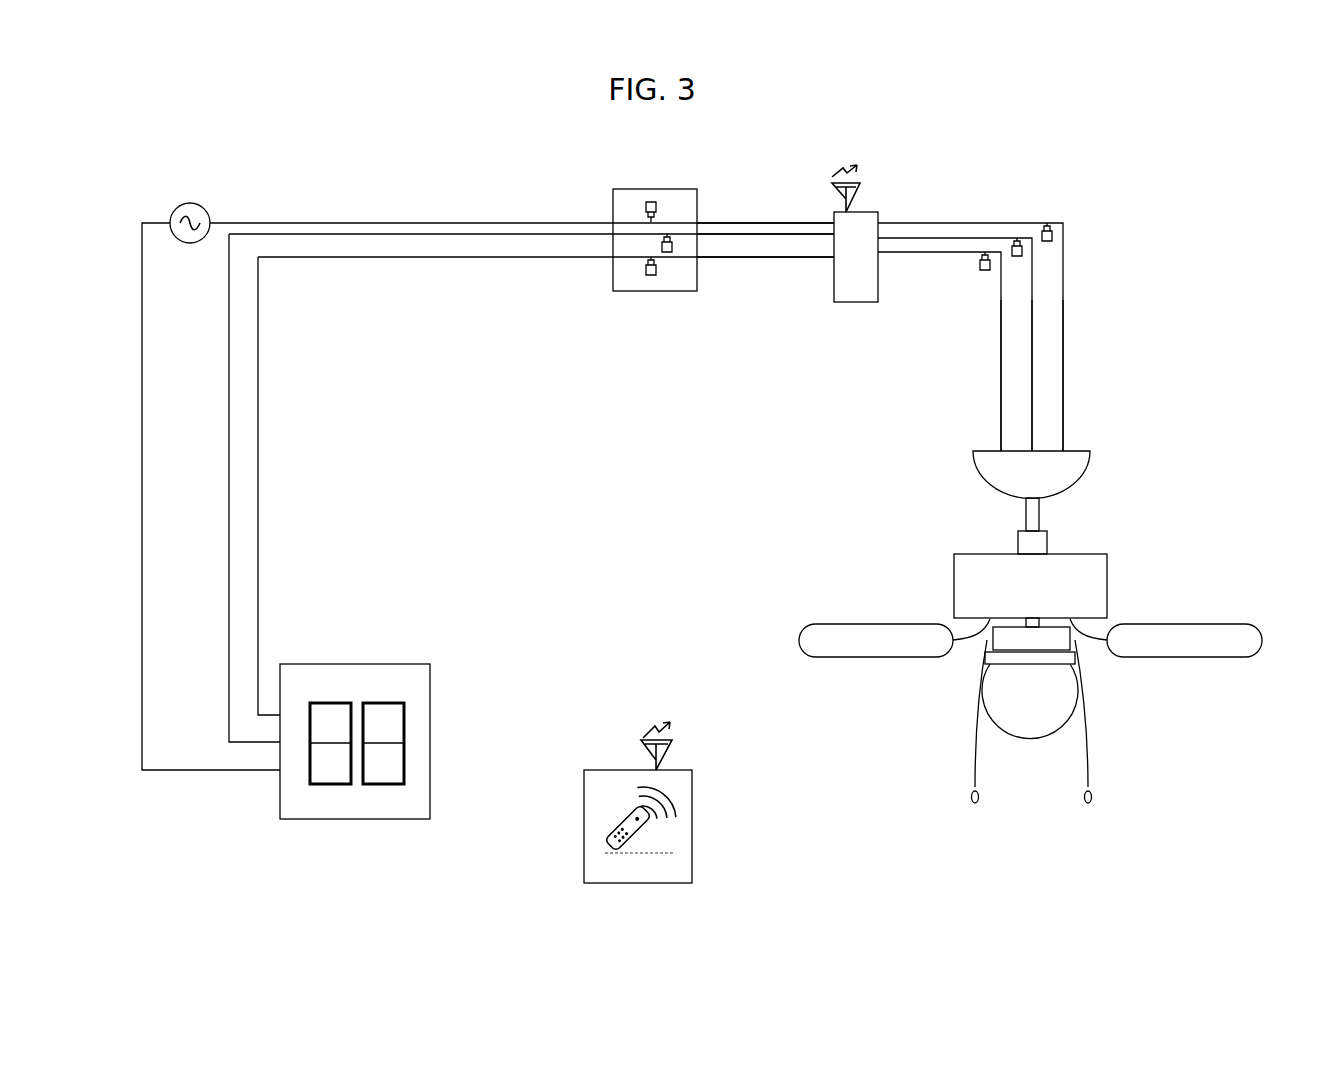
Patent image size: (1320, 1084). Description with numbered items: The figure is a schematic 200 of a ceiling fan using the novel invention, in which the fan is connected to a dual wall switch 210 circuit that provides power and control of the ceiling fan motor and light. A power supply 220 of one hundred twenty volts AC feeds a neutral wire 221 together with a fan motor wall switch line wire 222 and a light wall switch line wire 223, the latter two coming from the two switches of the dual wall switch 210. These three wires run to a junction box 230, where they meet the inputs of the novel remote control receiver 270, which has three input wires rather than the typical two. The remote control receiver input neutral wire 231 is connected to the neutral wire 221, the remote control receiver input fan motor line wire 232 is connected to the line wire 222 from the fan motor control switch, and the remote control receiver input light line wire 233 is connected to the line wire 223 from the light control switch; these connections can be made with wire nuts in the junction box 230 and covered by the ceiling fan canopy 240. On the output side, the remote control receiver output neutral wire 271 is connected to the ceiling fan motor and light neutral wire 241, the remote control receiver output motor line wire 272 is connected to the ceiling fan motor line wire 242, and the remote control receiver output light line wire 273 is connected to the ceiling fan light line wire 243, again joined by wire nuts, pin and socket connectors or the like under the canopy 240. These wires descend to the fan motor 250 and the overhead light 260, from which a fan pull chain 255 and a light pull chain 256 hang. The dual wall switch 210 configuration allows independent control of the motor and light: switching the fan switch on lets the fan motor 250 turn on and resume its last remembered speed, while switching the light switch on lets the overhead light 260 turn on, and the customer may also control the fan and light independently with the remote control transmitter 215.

The two wall switches for controlling ceiling fan and remote control 200 is at (1166, 135).
The dual wall switch 210 is at (408, 750).
The remote control transmitter 215 is at (695, 792).
The power supply (120 VAC) 220 is at (242, 179).
The neutral wire 221 is at (377, 220).
The fan motor wall switch line wire 222 is at (462, 232).
The light wall switch line wire 223 is at (377, 257).
The junction box 230 is at (633, 287).
The remote control receiver input neutral wire 231 is at (730, 222).
The remote control receiver input fan motor line wire 232 is at (746, 234).
The remote control receiver input light line wire 233 is at (710, 257).
The ceiling fan canopy 240 is at (985, 482).
The ceiling fan motor and light neutral wire 241 is at (1063, 272).
The ceiling fan motor line wire 242 is at (1033, 378).
The ceiling fan light line wire 243 is at (1000, 320).
The fan motor 250 is at (978, 585).
The fan pull chain 255 is at (970, 803).
The light pull chain 256 is at (1093, 803).
The overhead light 260 is at (1012, 698).
The remote control receiver 270 is at (858, 293).
The remote control receiver output neutral wire 271 is at (972, 222).
The remote control receiver output motor line wire 272 is at (905, 237).
The remote control receiver output light line wire 273 is at (953, 255).